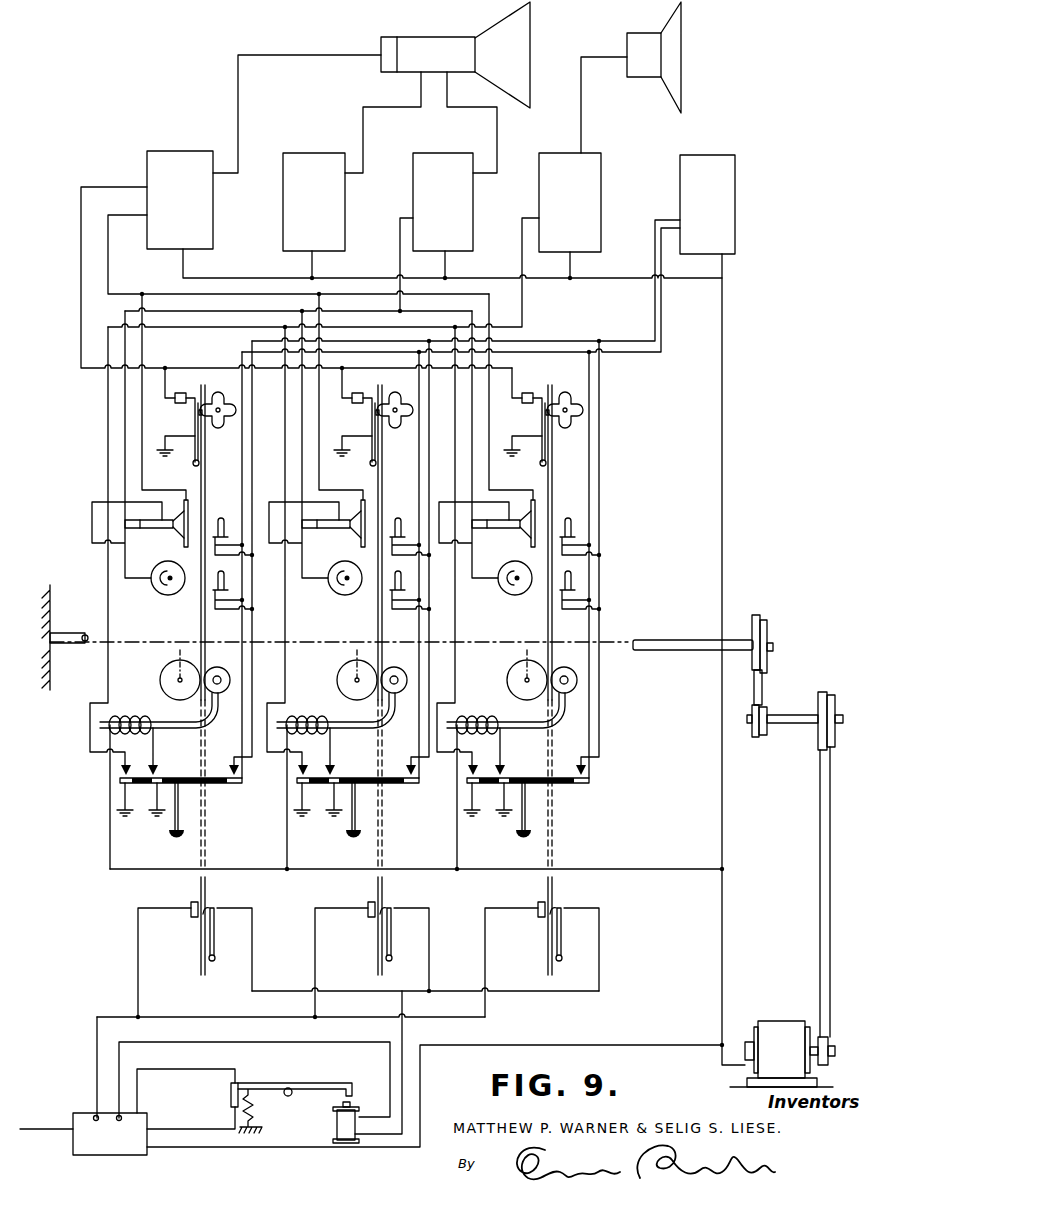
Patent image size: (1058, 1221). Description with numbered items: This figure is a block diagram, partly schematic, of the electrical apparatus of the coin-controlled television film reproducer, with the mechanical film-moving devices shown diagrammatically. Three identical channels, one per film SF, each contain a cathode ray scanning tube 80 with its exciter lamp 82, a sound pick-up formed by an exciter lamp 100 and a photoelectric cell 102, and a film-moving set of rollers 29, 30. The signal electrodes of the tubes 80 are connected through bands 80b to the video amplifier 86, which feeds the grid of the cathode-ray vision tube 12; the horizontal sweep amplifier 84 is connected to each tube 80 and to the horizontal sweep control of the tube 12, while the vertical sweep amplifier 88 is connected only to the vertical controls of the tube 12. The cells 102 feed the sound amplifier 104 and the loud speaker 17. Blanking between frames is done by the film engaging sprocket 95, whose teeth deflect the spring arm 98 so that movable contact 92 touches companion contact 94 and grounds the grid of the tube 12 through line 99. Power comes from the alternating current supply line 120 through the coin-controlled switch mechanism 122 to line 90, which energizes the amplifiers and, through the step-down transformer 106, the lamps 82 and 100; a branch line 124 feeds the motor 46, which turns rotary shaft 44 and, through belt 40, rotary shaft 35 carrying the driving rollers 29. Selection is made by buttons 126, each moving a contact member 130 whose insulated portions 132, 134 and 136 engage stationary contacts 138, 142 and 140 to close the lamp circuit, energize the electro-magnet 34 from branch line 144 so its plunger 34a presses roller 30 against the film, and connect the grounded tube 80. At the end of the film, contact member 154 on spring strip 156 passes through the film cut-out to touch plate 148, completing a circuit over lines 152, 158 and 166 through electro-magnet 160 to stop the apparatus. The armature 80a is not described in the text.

The cathode-ray vision tube 12 is at (438, 33).
The loud speaker 17 is at (684, 44).
The video amplifier 86 is at (213, 196).
The vertical sweep amplifier 88 is at (345, 198).
The horizontal sweep amplifier 84 is at (473, 198).
The sound amplifier 104 is at (601, 198).
The step-down transformer 106 is at (735, 195).
The line 99 is at (90, 371).
The line 90 is at (726, 468).
The movable contact 92 is at (198, 392).
The companion contact 94 is at (180, 403).
The film engaging sprocket 95 is at (222, 426).
The spring arm 98 is at (192, 460).
The film SF is at (207, 472).
The exciter lamp 82 is at (225, 518).
The cathode ray scanning tube 80 is at (166, 530).
The solenoid armature 80a is at (193, 533).
The band 80b is at (455, 533).
The photoelectric cell 102 is at (163, 592).
The exciter lamp 100 is at (209, 592).
The rotary shaft 35 is at (662, 640).
The roller 29 is at (161, 676).
The roller 30 is at (219, 669).
The electro-magnet 34 is at (142, 716).
The plunger 34a is at (332, 722).
The stationary contact member 140 is at (119, 770).
The stationary contact 142 is at (151, 766).
The stationary contact 138 is at (231, 766).
The movable contact member 130 is at (170, 777).
The contact portion 132 is at (238, 786).
The contact portion 136 is at (121, 789).
The contact portion 134 is at (155, 790).
The button 126 is at (348, 823).
The branch line 144 is at (627, 871).
The plate 148 is at (190, 902).
The movable contact member 154 is at (215, 907).
The spring strip 156 is at (216, 936).
The line 152 is at (172, 1015).
The line 158 is at (527, 993).
The line 166 is at (266, 1039).
The electro-magnet 160 is at (335, 1122).
The coin-controlled switch mechanism 122 is at (87, 1106).
The alternating current supply line 120 is at (33, 1127).
The branch line 124 is at (734, 1063).
The motor 46 is at (786, 1023).
The belt 40 is at (768, 688).
The rotary shaft 44 is at (787, 724).